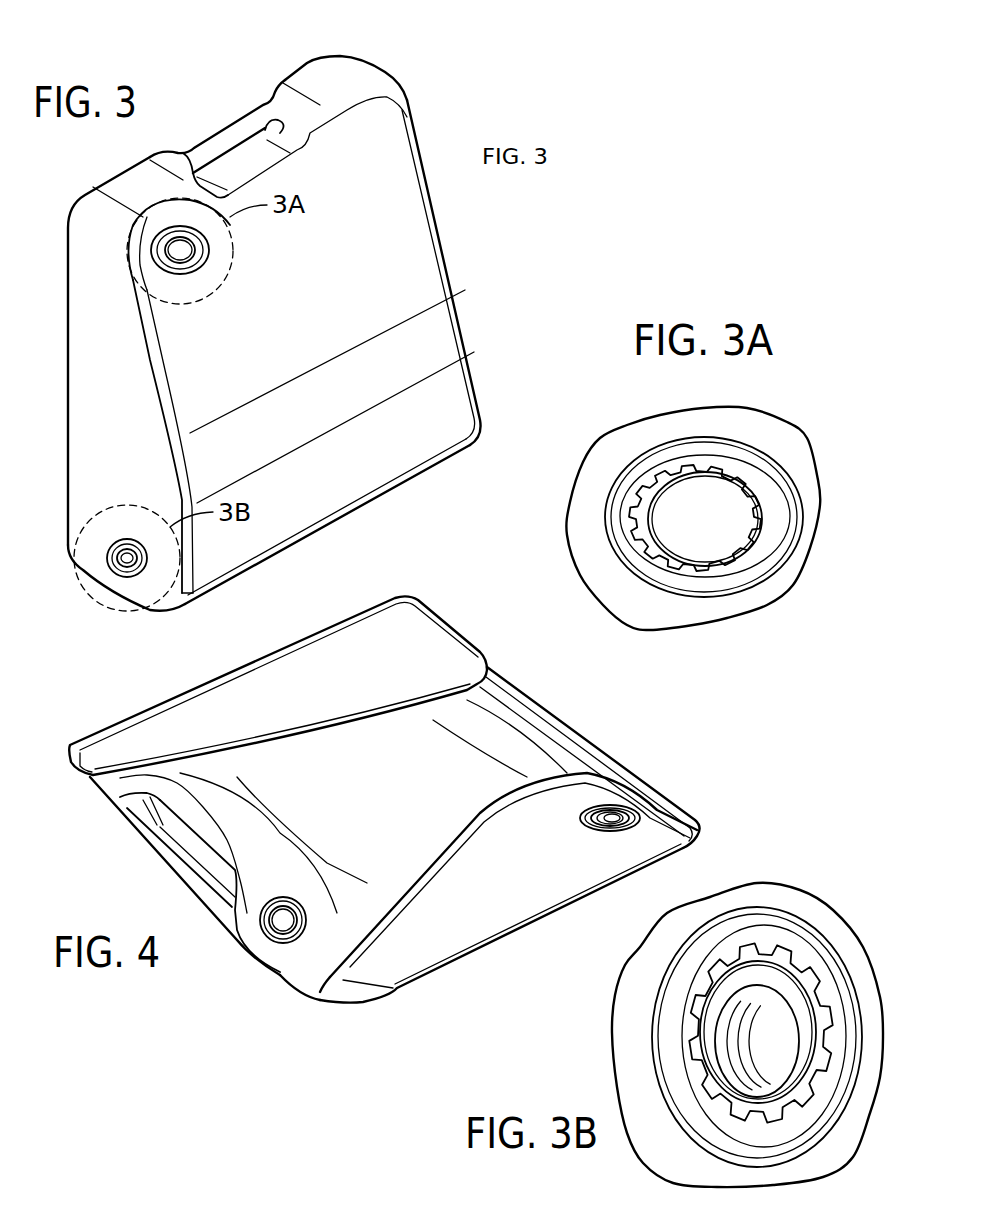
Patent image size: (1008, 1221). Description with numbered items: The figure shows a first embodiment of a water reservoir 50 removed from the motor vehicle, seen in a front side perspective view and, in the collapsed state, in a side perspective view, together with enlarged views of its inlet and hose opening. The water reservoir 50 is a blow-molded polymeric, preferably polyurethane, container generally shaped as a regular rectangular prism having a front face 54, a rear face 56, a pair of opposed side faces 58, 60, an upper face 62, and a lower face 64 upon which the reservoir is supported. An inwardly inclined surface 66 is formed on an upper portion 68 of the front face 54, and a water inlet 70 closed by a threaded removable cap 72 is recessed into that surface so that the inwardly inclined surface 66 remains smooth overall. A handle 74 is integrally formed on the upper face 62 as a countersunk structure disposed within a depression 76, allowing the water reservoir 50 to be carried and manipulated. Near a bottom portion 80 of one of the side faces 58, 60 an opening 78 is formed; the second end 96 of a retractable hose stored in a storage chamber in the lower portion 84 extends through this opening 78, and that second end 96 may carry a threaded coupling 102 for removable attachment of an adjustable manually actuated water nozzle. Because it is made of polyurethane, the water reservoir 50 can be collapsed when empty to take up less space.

In FIG. 3, the water reservoir 50 is at (432, 70).
In FIG. 4, the water reservoir 50 is at (661, 750).
In FIG. 3, the front face 54 is at (427, 241).
In FIG. 4, the front face 54 is at (523, 730).
In FIG. 3, the rear face 56 is at (67, 320).
In FIG. 4, the rear face 56 is at (483, 950).
In FIG. 3, the side face 58 is at (87, 443).
In FIG. 3B, the side face 58 is at (830, 1150).
In FIG. 4, the side face 58 is at (443, 933).
In FIG. 3, the side face 60 is at (430, 153).
In FIG. 4, the side face 60 is at (380, 640).
In FIG. 3, the upper face 62 is at (305, 72).
In FIG. 3, the lower face 64 is at (343, 517).
In FIG. 4, the lower face 64 is at (367, 1003).
In FIG. 3, the inwardly inclined surface 66 is at (410, 207).
In FIG. 3A, the inwardly inclined surface 66 is at (790, 452).
In FIG. 4, the inwardly inclined surface 66 is at (307, 960).
In FIG. 3, the upper portion 68 is at (427, 273).
In FIG. 3A, the upper portion 68 is at (813, 537).
In FIG. 4, the upper portion 68 is at (147, 773).
In FIG. 3, the water inlet 70 is at (190, 263).
In FIG. 3A, the water inlet 70 is at (727, 473).
In FIG. 3A, the threaded removable cap 72 is at (717, 545).
In FIG. 3, the handle 74 is at (208, 147).
In FIG. 4, the handle 74 is at (213, 903).
In FIG. 3, the depression 76 is at (253, 167).
In FIG. 4, the depression 76 is at (210, 850).
In FIG. 3, the opening 78 is at (123, 573).
In FIG. 3B, the opening 78 is at (823, 977).
In FIG. 4, the opening 78 is at (640, 813).
In FIG. 3, the bottom portion 80 is at (167, 600).
In FIG. 4, the bottom portion 80 is at (657, 837).
In FIG. 3, the lower portion 84 is at (430, 443).
In FIG. 4, the lower portion 84 is at (490, 697).
In FIG. 3B, the second end 96 is at (800, 1073).
In FIG. 3B, the threaded coupling 102 is at (723, 1087).